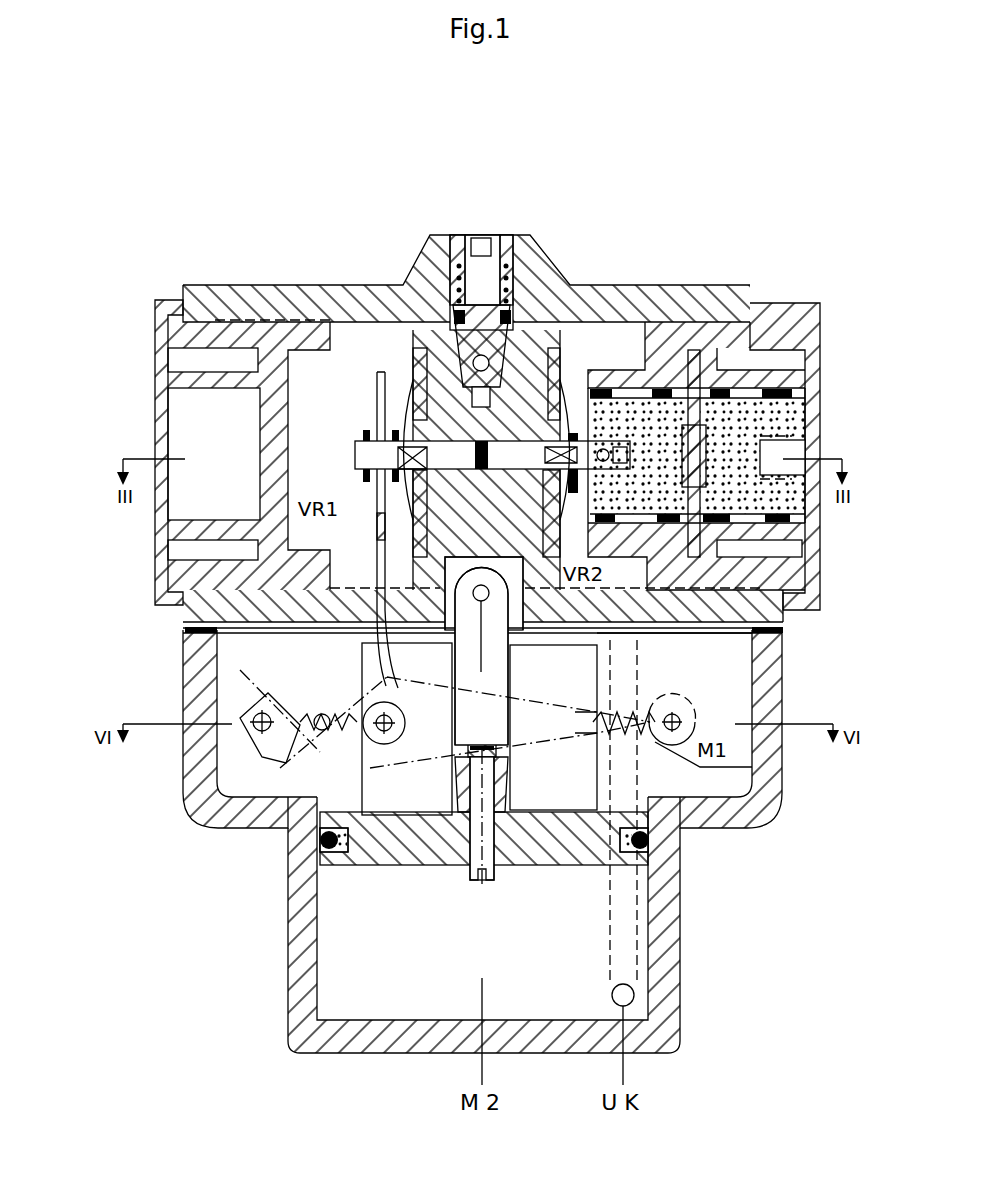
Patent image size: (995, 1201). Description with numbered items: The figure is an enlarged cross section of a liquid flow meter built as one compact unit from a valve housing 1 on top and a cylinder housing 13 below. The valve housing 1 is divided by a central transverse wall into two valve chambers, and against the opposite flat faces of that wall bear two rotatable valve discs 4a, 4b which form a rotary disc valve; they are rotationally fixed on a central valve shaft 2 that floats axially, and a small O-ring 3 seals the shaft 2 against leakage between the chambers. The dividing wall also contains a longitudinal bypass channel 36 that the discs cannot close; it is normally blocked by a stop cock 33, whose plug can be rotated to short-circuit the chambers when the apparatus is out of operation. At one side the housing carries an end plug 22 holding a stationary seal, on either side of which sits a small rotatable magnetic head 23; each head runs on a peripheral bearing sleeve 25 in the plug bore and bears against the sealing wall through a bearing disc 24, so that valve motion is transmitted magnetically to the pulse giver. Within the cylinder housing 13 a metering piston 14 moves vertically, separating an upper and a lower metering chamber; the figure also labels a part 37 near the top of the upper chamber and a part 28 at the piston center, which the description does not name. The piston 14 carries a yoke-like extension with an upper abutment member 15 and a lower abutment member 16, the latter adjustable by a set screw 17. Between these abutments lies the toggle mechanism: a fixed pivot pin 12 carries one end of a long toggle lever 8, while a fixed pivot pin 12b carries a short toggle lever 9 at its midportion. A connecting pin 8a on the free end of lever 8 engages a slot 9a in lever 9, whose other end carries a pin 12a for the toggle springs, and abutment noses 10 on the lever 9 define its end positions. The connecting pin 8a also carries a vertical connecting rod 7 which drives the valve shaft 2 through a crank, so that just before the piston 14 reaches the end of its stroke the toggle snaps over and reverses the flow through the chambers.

The valve housing 1 is at (228, 300).
The end plug 22 is at (290, 320).
The connecting rod 7 is at (378, 413).
The valve disc 4a is at (420, 395).
The stop cock 33 is at (481, 285).
The bypass channel 36 is at (444, 366).
The O-ring 3 is at (490, 420).
The valve shaft 2 is at (515, 455).
The valve disc 4b is at (587, 420).
The magnetic head 23 is at (648, 420).
The bearing disc 24 is at (718, 417).
The bearing sleeve 25 is at (770, 408).
The chamber wall 37 is at (680, 642).
The abutment nose 10 is at (240, 669).
The upper abutment member 15 is at (482, 671).
The pin 12a is at (258, 715).
The pivot pin 12b is at (322, 713).
The connecting pin 8a is at (390, 708).
The slot 9a is at (396, 722).
The pivot pin 12 is at (680, 717).
The short toggle lever 9 is at (290, 767).
The long toggle lever 8 is at (752, 770).
The column 28 is at (477, 781).
The lower abutment member 16 is at (320, 837).
The metering piston 14 is at (633, 857).
The cylinder housing 13 is at (302, 945).
The set screw 17 is at (485, 853).